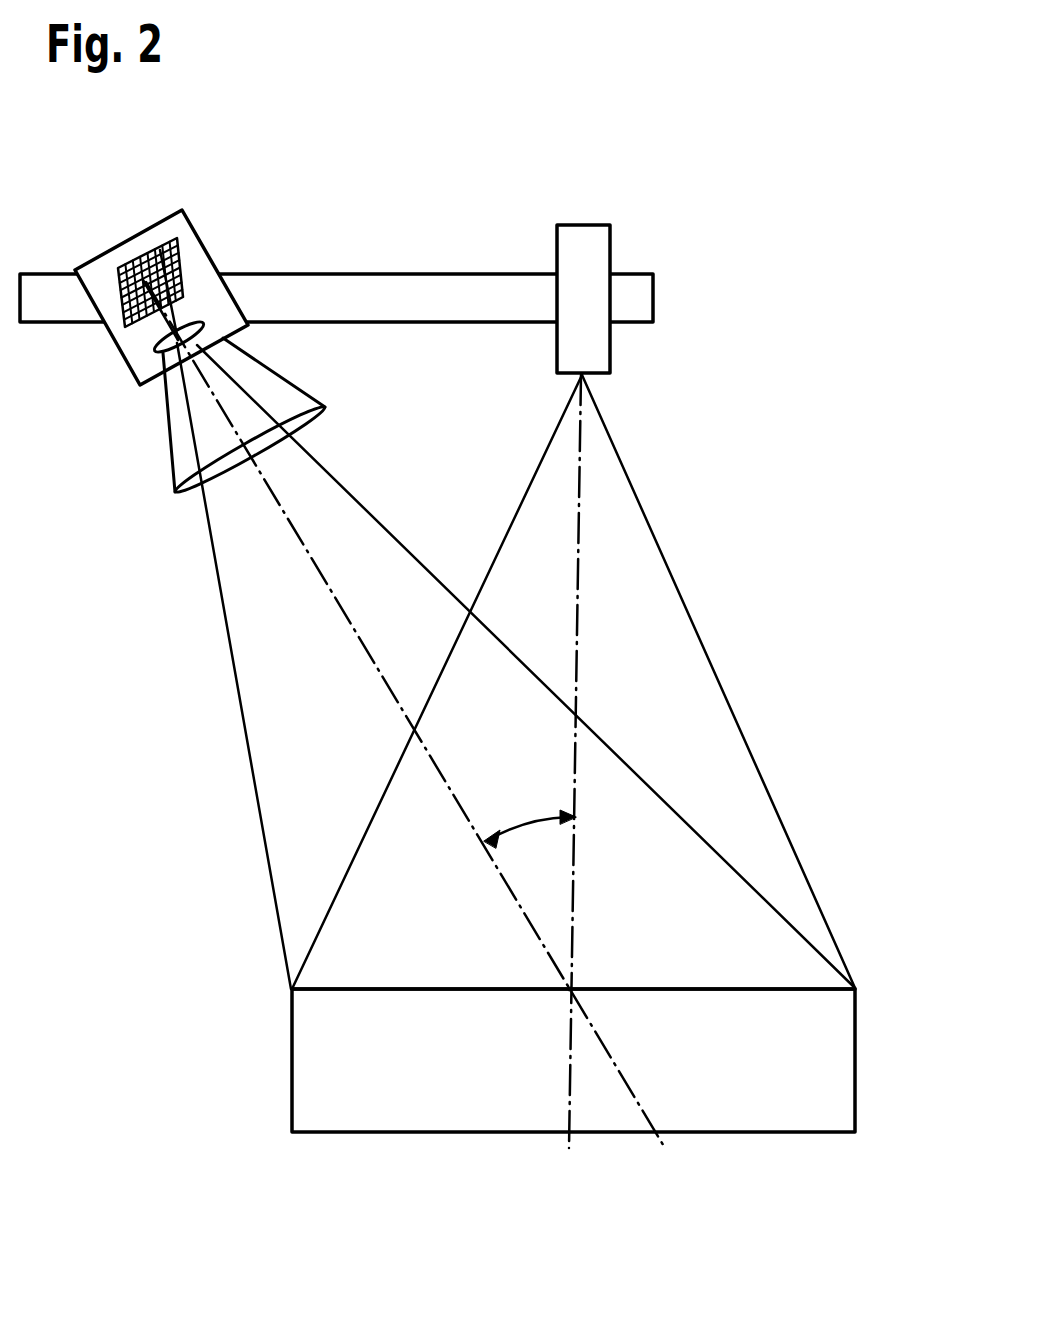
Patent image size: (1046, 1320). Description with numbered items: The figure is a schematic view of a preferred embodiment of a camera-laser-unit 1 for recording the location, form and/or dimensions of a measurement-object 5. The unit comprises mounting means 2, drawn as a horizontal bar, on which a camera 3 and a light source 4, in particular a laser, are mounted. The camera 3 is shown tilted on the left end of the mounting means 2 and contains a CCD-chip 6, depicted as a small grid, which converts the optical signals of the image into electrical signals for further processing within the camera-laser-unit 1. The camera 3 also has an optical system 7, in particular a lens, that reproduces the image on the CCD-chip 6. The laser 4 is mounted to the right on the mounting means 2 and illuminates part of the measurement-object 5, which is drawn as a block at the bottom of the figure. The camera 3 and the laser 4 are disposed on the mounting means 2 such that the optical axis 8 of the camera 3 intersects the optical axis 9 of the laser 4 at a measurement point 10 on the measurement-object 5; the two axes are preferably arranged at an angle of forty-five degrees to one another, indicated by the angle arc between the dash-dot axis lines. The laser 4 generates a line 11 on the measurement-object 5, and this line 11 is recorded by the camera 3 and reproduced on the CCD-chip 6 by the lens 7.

The camera-laser-unit 1 is at (447, 184).
The mounting means 2 is at (381, 282).
The camera 3 is at (187, 253).
The light source 4 is at (582, 262).
The measurement-object 5 is at (840, 1063).
The CCD-chip 6 is at (162, 250).
The optical system 7 is at (157, 351).
The optical axis of the camera 8 is at (305, 545).
The optical axis of the laser 9 is at (577, 545).
The measurement point 10 is at (565, 993).
The line 11 is at (690, 988).